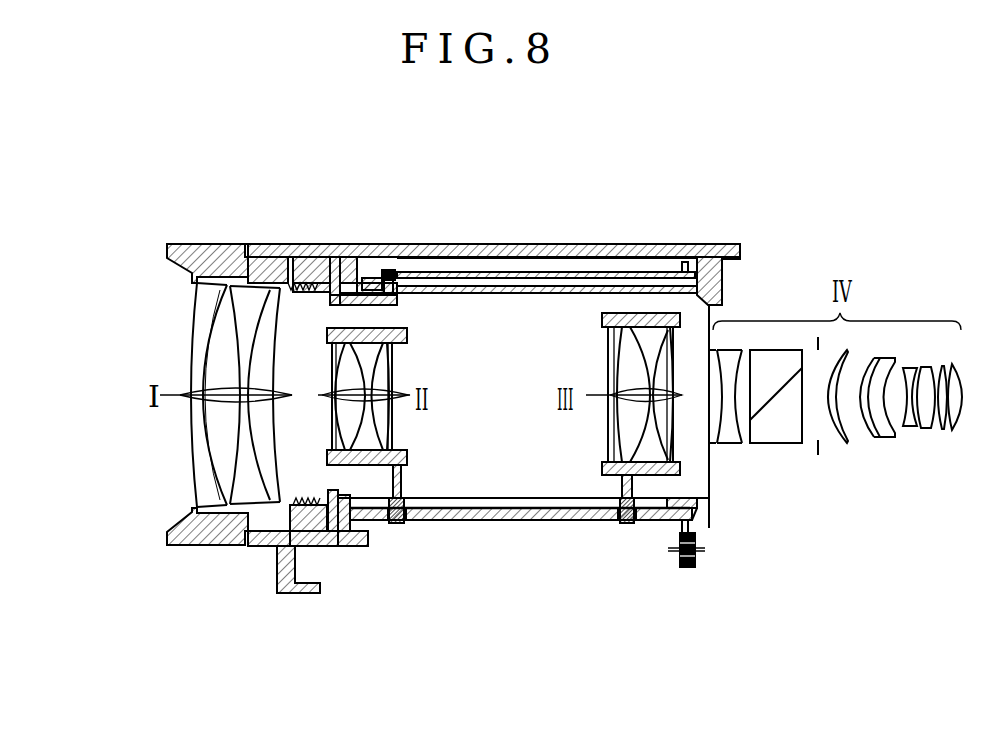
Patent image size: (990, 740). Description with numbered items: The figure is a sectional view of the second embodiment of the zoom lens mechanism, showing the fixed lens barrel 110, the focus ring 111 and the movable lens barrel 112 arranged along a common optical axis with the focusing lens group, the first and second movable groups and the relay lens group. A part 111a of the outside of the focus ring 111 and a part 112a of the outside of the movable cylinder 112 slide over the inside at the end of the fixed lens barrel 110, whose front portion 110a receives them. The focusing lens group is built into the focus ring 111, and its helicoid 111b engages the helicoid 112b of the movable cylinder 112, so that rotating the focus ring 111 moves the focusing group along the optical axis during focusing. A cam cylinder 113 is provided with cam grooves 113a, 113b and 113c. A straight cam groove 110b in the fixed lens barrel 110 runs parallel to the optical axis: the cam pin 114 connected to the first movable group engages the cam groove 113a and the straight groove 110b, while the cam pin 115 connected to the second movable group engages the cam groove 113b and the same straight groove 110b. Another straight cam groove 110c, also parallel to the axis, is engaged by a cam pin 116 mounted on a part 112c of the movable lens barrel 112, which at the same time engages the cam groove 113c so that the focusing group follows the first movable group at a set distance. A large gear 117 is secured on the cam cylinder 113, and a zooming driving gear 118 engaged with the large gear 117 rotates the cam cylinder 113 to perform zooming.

The fixed lens barrel 110 is at (605, 252).
The front flange of lens barrel 110a is at (290, 262).
The straight cam groove 110b is at (507, 497).
The straight cam groove 110c is at (395, 262).
The focus ring 111 is at (218, 257).
The part of the outside of the focus ring 111a is at (259, 262).
The helicoid 111b is at (303, 293).
The movable lens barrel 112 is at (335, 280).
The part of the outside of the movable cylinder 112a is at (313, 268).
The helicoid 112b is at (365, 280).
The part of the movable lens barrel 112c is at (392, 294).
The cam cylinder 113 is at (508, 521).
The cam groove 113a is at (408, 523).
The cam groove 113b is at (613, 521).
The cam groove 113c is at (445, 262).
The cam pin 114 is at (402, 478).
The cam pin 115 is at (622, 488).
The cam pin 116 is at (397, 291).
The large gear 117 is at (680, 525).
The zooming driving gear 118 is at (687, 568).